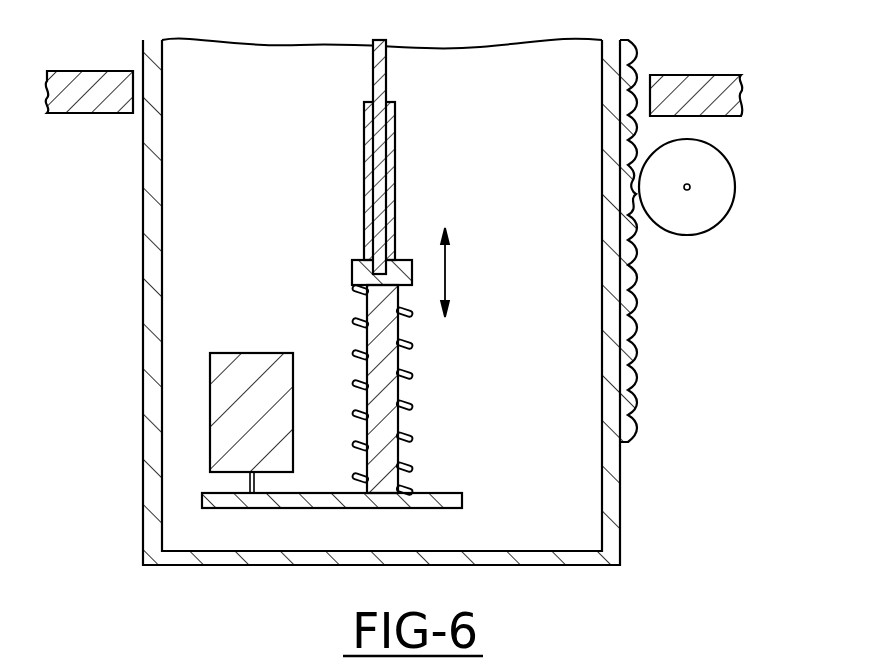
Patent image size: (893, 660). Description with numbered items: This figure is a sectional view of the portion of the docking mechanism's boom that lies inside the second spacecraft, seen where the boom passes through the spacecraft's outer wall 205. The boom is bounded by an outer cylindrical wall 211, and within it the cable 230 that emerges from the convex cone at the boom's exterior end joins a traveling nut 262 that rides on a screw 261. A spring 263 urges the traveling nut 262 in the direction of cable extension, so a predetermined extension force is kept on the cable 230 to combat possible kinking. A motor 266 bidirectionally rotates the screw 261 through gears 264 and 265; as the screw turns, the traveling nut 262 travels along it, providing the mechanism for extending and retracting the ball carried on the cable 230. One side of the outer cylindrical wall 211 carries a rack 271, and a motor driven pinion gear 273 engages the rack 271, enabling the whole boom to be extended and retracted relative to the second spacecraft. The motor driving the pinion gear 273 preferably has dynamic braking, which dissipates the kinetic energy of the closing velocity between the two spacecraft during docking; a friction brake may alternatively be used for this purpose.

The outer wall 205 is at (90, 71).
The outer cylindrical wall 211 is at (143, 266).
The cable 230 is at (373, 60).
The screw 261 is at (367, 308).
The traveling nut 262 is at (364, 194).
The spring 263 is at (412, 374).
The gear 264 is at (400, 508).
The gear 265 is at (300, 508).
The motor 266 is at (243, 353).
The rack 271 is at (640, 346).
The pinion gear 273 is at (697, 235).